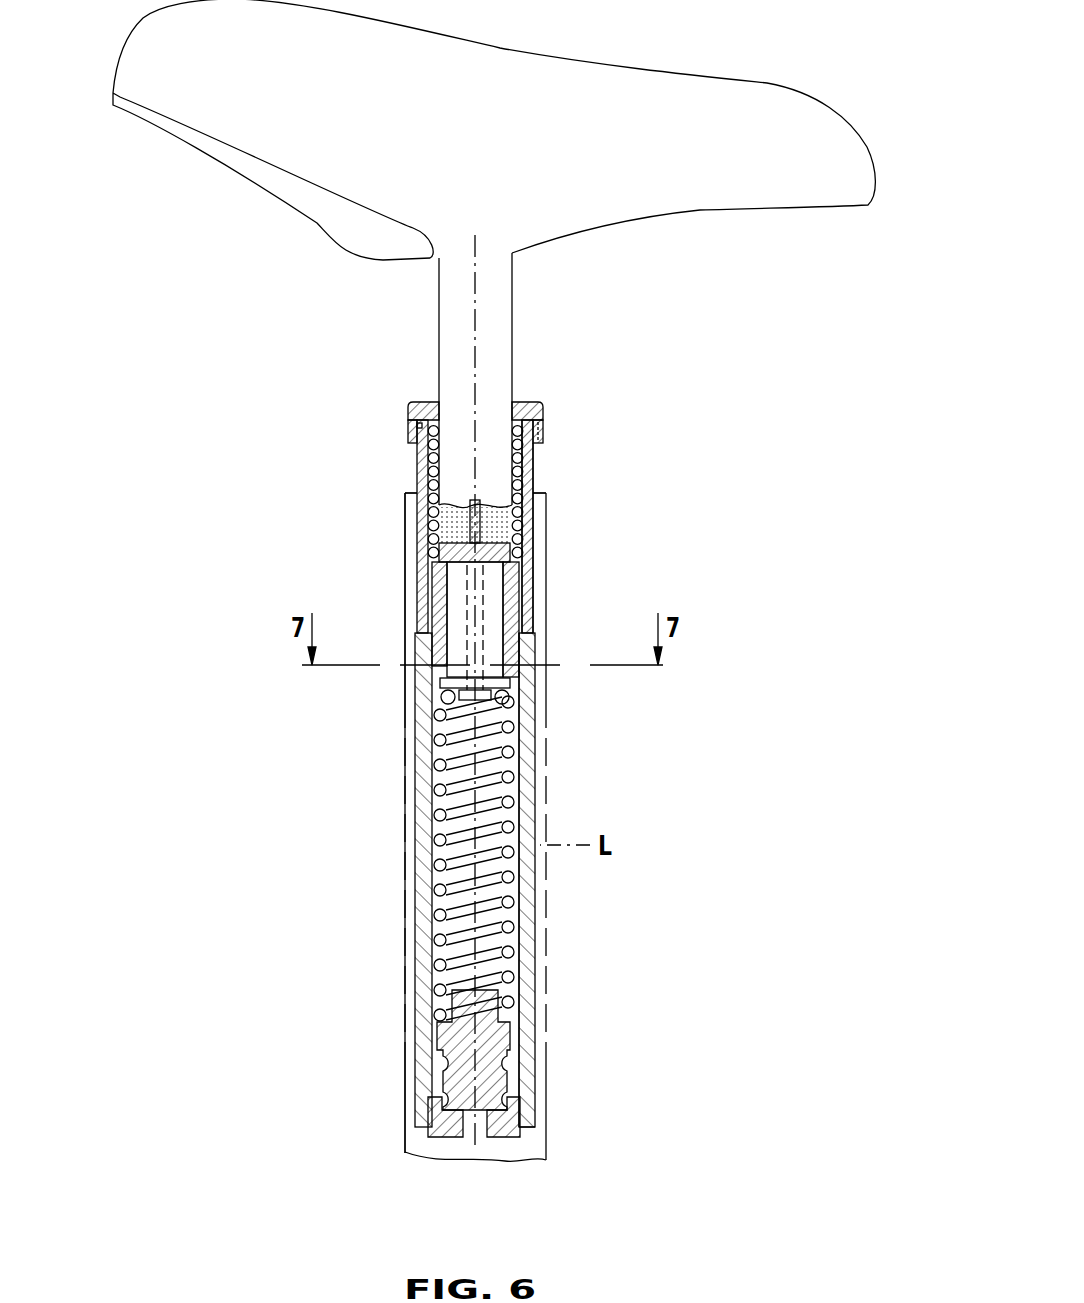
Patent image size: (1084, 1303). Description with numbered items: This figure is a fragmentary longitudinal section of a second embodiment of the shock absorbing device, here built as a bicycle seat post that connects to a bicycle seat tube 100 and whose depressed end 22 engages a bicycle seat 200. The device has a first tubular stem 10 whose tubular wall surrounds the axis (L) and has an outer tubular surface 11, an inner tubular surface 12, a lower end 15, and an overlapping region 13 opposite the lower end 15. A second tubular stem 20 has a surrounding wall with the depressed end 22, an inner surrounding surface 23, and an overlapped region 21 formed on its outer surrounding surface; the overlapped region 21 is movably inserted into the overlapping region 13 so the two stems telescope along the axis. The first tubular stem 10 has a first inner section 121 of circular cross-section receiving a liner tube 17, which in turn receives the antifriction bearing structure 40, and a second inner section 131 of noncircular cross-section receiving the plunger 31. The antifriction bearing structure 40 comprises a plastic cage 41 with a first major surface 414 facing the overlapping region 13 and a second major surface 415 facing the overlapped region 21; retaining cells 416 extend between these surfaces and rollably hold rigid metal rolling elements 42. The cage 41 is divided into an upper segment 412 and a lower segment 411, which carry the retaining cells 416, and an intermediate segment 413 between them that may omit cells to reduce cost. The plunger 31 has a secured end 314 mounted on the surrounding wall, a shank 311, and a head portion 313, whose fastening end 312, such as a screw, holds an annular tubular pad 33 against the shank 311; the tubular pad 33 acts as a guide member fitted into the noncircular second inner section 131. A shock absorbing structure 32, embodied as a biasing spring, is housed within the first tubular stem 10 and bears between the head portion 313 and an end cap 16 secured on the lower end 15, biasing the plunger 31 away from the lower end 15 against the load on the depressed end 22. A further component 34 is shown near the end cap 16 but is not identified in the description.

The bicycle seat 200 is at (684, 95).
The second tubular stem 20 is at (525, 312).
The depressed end 22 is at (513, 257).
The inner surrounding surface 23 is at (510, 428).
The antifriction bearing structure 40 is at (536, 461).
The cage 41 is at (415, 438).
The second major surface 415 is at (420, 427).
The retaining cells 416 is at (420, 453).
The rolling elements 42 is at (420, 475).
The upper segment 412 is at (537, 433).
The first major surface 414 is at (533, 447).
The intermediate segment 413 is at (537, 490).
The lower segment 411 is at (523, 555).
The overlapping region 13 is at (538, 476).
The liner tube 17 is at (403, 498).
The overlapped region 21 is at (493, 523).
The secured end 314 is at (432, 542).
The tubular pad 33 is at (428, 560).
The plunger 31 is at (460, 602).
The shank 311 is at (460, 628).
The head portion 313 is at (440, 680).
The fastening end 312 is at (442, 710).
The inner tubular surface 12 is at (527, 612).
The first inner section 121 is at (537, 580).
The outer tubular surface 11 is at (537, 777).
The second inner section 131 is at (530, 727).
The first tubular stem 10 is at (542, 815).
The bicycle seat tube 100 is at (558, 995).
The shock absorbing structure 32 is at (440, 837).
The bottom block 34 is at (453, 1078).
The lower end 15 is at (523, 1100).
The end cap 16 is at (507, 1133).